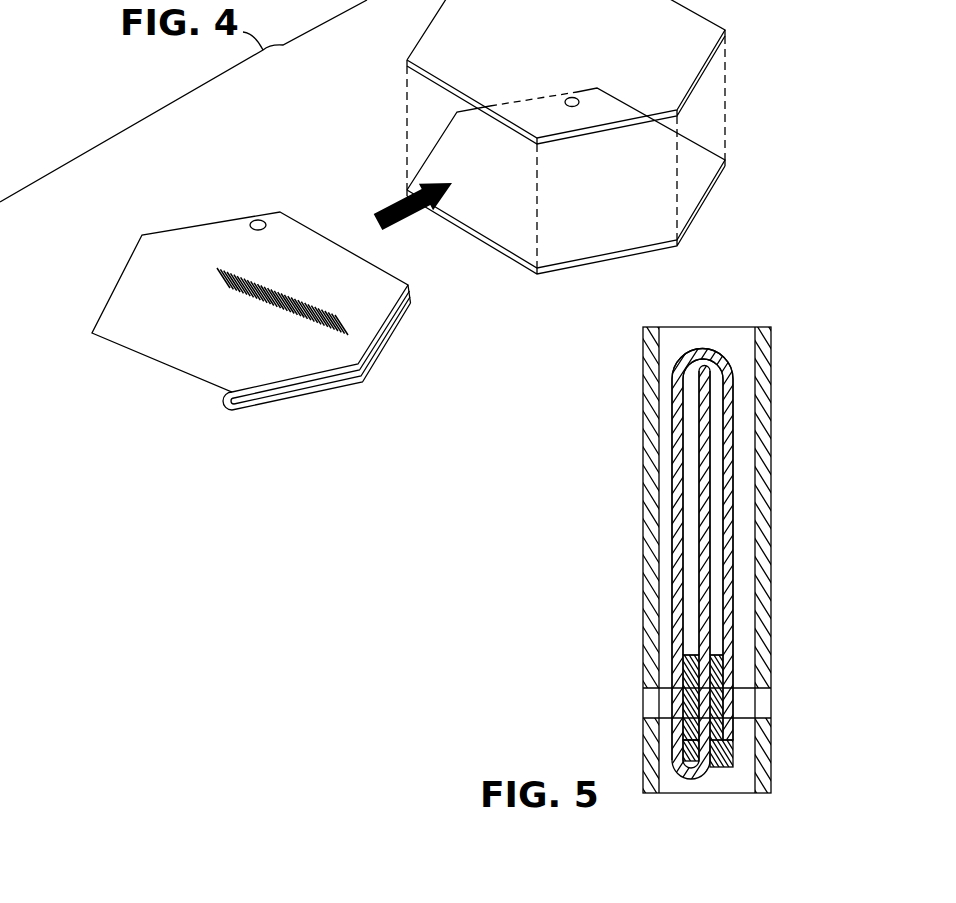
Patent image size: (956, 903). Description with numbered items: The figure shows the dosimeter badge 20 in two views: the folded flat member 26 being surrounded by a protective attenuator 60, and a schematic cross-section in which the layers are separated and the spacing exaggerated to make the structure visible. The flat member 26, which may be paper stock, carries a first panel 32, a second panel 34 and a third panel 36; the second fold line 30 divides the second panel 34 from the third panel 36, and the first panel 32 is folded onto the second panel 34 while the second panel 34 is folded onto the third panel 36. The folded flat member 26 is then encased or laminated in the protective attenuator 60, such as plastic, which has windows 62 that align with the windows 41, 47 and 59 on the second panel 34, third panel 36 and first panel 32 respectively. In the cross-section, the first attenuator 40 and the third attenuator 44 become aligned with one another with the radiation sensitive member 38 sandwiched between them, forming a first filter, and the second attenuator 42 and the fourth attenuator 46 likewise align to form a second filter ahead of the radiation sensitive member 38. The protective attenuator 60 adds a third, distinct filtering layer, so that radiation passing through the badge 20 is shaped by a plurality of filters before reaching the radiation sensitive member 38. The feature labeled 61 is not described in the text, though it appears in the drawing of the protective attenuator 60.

In FIG. 4, the dosimeter badge 20 is at (596, 168).
In FIG. 5, the dosimeter badge 20 is at (697, 510).
In FIG. 4, the flat member 26 is at (243, 415).
In FIG. 5, the flat member 26 is at (715, 345).
In FIG. 4, the second fold line 30 is at (277, 347).
In FIG. 4, the first panel 32 is at (277, 390).
In FIG. 5, the first panel 32 is at (716, 463).
In FIG. 4, the second panel 34 is at (327, 390).
In FIG. 5, the second panel 34 is at (670, 509).
In FIG. 4, the third panel 36 is at (363, 332).
In FIG. 5, the third panel 36 is at (744, 388).
In FIG. 5, the radiation sensitive member 38 is at (687, 655).
In FIG. 5, the first attenuator 40 is at (685, 753).
In FIG. 5, the window 41 is at (690, 673).
In FIG. 5, the second attenuator 42 is at (688, 668).
In FIG. 5, the third attenuator 44 is at (728, 747).
In FIG. 5, the fourth attenuator 46 is at (720, 657).
In FIG. 5, the window 47 is at (728, 703).
In FIG. 5, the window 59 is at (703, 705).
In FIG. 4, the protective attenuator 60 is at (706, 14).
In FIG. 5, the protective attenuator 60 is at (647, 355).
In FIG. 5, the apertures 61 is at (655, 705).
In FIG. 4, the window 62 is at (577, 93).